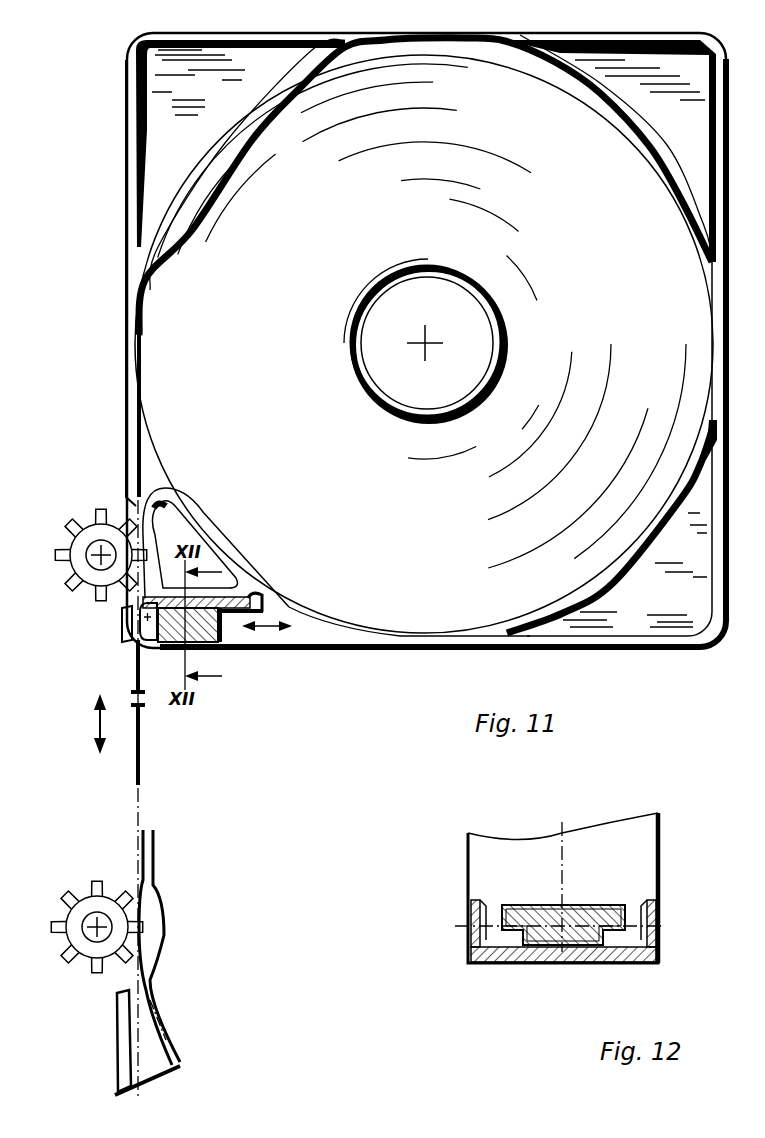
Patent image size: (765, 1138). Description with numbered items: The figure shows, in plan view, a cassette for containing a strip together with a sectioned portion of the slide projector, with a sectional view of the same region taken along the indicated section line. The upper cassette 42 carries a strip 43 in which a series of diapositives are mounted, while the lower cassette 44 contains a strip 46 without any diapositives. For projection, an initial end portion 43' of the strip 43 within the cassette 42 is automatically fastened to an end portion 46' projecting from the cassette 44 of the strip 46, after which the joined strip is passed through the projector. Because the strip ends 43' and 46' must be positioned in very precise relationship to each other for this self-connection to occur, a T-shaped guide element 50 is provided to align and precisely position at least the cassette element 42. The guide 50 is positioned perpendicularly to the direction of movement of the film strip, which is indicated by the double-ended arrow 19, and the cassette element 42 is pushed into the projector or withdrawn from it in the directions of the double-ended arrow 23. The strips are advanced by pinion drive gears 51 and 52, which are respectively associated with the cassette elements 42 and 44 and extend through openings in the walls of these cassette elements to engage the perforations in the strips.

In FIG. 11, the upper cassette 42 is at (611, 640).
In FIG. 12, the upper cassette 42 is at (612, 877).
In FIG. 11, the strip 43 is at (160, 283).
In FIG. 11, the initial end portion of the strip 43' is at (98, 695).
In FIG. 11, the lower cassette 44 is at (153, 1023).
In FIG. 11, the strip without diapositives 46 is at (178, 1044).
In FIG. 11, the end portion of the strip 46' is at (165, 745).
In FIG. 11, the double-ended arrow 19 is at (96, 727).
In FIG. 11, the double-ended arrow 23 is at (276, 648).
In FIG. 11, the T-shaped guide element 50 is at (226, 628).
In FIG. 12, the T-shaped guide element 50 is at (541, 947).
In FIG. 11, the pinion drive gear 51 is at (95, 532).
In FIG. 11, the pinion drive gear 52 is at (88, 905).